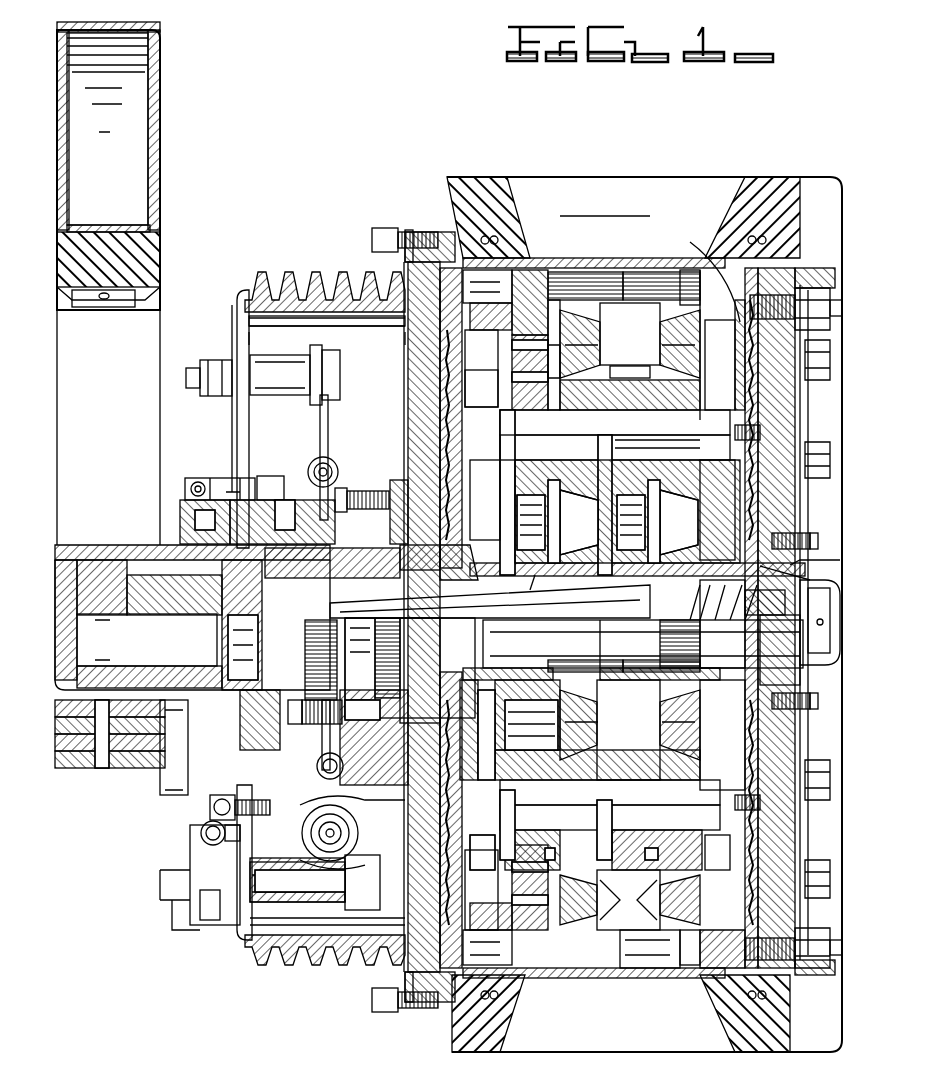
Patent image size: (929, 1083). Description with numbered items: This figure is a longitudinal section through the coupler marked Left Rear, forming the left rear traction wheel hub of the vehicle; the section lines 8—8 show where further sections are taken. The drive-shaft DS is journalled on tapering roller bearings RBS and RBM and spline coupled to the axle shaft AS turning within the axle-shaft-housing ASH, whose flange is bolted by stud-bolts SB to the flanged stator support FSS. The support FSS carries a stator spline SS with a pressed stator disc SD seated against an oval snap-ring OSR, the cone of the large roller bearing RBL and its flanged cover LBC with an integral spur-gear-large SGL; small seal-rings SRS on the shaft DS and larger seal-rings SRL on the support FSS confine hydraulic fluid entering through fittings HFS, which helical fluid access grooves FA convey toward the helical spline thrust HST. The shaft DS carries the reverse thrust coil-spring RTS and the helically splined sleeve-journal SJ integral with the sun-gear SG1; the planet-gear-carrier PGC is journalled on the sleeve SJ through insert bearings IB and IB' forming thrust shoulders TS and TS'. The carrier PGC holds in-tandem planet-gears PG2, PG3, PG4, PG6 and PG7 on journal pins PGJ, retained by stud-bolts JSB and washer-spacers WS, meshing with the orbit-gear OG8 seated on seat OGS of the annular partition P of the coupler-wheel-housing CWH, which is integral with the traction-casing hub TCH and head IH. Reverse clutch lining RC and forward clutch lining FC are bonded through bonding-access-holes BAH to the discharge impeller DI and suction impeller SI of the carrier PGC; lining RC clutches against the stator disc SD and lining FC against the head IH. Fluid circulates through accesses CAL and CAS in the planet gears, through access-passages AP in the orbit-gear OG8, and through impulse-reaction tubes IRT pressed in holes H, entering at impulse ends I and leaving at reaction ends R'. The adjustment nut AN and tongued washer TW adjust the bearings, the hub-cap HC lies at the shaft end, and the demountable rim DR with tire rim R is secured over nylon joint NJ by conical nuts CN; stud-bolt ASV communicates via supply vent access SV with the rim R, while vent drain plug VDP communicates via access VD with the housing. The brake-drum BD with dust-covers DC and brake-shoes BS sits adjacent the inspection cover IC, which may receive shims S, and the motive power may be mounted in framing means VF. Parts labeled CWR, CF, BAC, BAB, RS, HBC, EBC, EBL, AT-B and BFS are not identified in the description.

The vehicle framing means VF is at (160, 110).
The reamed holes H is at (515, 258).
The coupler-wheel-housing CWH is at (598, 258).
The cooling wall rear CWR is at (582, 978).
The left rear orientation Left Rear is at (605, 209).
The inspection cover IC is at (408, 240).
The fluid discharge impeller DI is at (447, 387).
The cooling fins CF is at (300, 270).
The brake-drum BD is at (240, 294).
The dust-covers DC is at (232, 324).
The brake-shoes BS is at (300, 332).
The brake actuator cylinder BAC is at (300, 397).
The brake actuator bolt BAB is at (208, 360).
The reverse clutch lining RC is at (445, 352).
The stator disc SD is at (440, 402).
The return spring RS is at (333, 464).
The hydraulic fluid supply access HFS is at (200, 478).
The flanged stator support FSS is at (285, 474).
The large diameter roller bearing RBL is at (392, 492).
The medium diameter roller bearing RBM is at (220, 522).
The axle-shaft-housing ASH is at (70, 545).
The axle shaft AS is at (125, 560).
The drive-shaft DS is at (195, 627).
The spur-gear-large SGL is at (318, 712).
The stud-bolts SB is at (300, 724).
The small fluid seal-rings SRS is at (310, 599).
The large fluid seal-rings SRL is at (400, 577).
The oval snap-ring OSR is at (410, 632).
The stator spline SS is at (490, 602).
The thrust shoulder TS is at (490, 602).
The fluid access grooves FA is at (535, 592).
The sleeve-journal SJ is at (565, 578).
The helical spline thrust HST is at (591, 644).
The sun-gear SG1 is at (662, 642).
The reverse thrust coil-spring RTS is at (723, 624).
The insert bearing IB' is at (772, 637).
The adjustment nut AN is at (822, 582).
The hub-cap HC is at (805, 564).
The small diameter roller bearing RBS is at (800, 535).
The tongued locking washer TW is at (810, 692).
The thrust shoulder TS' is at (717, 511).
The integral head IH is at (790, 492).
The forward clutch lining FC is at (758, 372).
The suction impeller SI is at (710, 332).
The stud-bolts JSB is at (760, 437).
The conical nuts CN is at (798, 320).
The vent drain plug VDP is at (836, 300).
The nylon joint NJ is at (800, 268).
The vent drain access VD is at (709, 273).
The demountable rim DR is at (800, 862).
The special stud-bolt ASV is at (828, 970).
The fluid flow impulse I is at (487, 617).
The annular partition P is at (528, 287).
The orbit-gear seat OGS is at (580, 270).
The planet-gear PG6 is at (575, 322).
The planet-gear PG2 is at (665, 322).
The tire rim R is at (654, 640).
The traction-casing hub TCH is at (700, 272).
The impulse and reaction circulating tubes IRT is at (612, 270).
The large fluid induction circulating access CAL is at (630, 541).
The bonding-access-holes BAH is at (483, 368).
The fluid circulating access-passages AP is at (512, 364).
The orbit-gear OG8 is at (536, 615).
The planet-gear PG7 is at (548, 397).
The small fluid induction circulating access CAS is at (590, 397).
The planet-gear PG3 is at (630, 397).
The planet-gear-carrier PGC is at (700, 402).
The washer-spacers WS is at (598, 450).
The planet-gear PG4 is at (656, 450).
The planet-gear journal pins PGJ is at (692, 470).
The insert bearing IB is at (605, 511).
The reaction fluid flow R' is at (655, 949).
The supply vent access SV is at (700, 962).
The hydraulic brake cylinder HBC is at (358, 837).
The bearing cover LBC is at (355, 772).
The emergency brake cylinder EBC is at (345, 877).
The emergency brake lever EBL is at (192, 859).
The attachment bolt AT-B is at (200, 834).
The brake fluid supply BFS is at (220, 795).
The section lines 8— 8 is at (472, 165).
The adjustment shims S is at (408, 232).